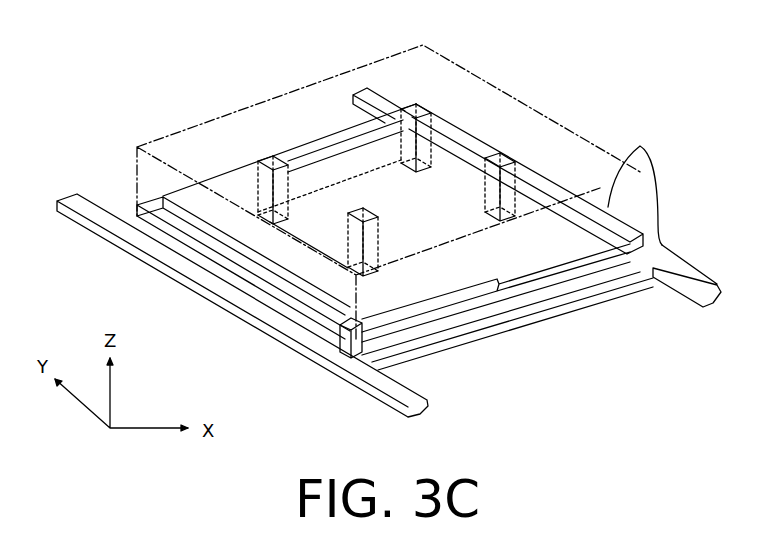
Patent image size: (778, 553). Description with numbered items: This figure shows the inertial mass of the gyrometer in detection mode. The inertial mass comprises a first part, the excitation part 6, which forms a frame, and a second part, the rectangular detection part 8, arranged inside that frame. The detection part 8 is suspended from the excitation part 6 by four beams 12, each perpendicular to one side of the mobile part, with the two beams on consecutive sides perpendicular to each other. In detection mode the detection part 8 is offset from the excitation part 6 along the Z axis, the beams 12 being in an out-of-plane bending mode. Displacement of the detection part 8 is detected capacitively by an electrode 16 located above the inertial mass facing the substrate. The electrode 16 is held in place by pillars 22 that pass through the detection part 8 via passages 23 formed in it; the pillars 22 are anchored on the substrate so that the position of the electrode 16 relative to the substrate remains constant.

The excitation part 6 is at (168, 260).
The detection part 8 is at (247, 172).
The beams 12 is at (620, 184).
The electrode 16 is at (290, 103).
The pillars 22 is at (494, 152).
The passages 23 is at (545, 252).